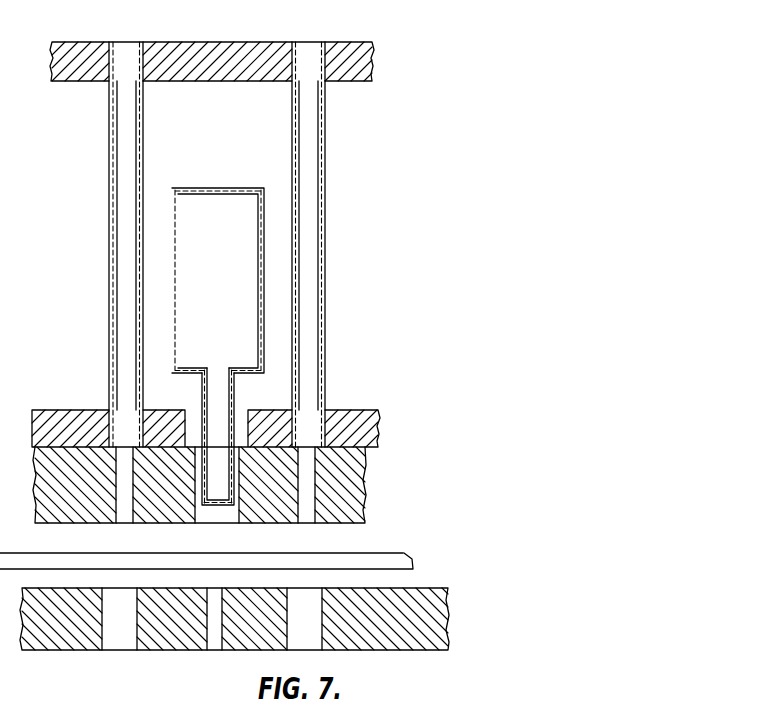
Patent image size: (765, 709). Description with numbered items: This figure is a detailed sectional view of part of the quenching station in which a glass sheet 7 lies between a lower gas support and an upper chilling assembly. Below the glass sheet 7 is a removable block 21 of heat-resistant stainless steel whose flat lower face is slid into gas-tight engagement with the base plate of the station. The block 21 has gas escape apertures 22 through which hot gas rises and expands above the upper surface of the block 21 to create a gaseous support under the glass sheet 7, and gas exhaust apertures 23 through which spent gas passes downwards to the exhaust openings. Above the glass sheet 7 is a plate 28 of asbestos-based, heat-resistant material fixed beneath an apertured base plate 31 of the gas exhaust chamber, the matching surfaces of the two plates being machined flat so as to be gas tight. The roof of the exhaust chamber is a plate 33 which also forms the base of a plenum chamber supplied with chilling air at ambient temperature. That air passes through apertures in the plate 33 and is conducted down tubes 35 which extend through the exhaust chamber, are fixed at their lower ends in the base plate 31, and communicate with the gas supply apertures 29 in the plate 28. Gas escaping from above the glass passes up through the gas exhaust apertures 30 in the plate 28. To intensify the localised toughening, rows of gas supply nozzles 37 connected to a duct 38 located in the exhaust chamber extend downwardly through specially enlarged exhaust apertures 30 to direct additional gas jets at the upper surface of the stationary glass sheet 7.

The glass sheet 7 is at (402, 553).
The removable block 21 is at (418, 641).
The gas escape aperture 22 is at (219, 638).
The gas exhaust aperture 23 is at (133, 638).
The plate 28 is at (348, 510).
The gas supply aperture 29 is at (122, 500).
The gas exhaust aperture 30 is at (196, 493).
The apertured base plate 31 is at (362, 418).
The plate 33 is at (236, 52).
The tube 35 is at (326, 189).
The gas supply nozzle 37 is at (218, 428).
The duct 38 is at (217, 200).